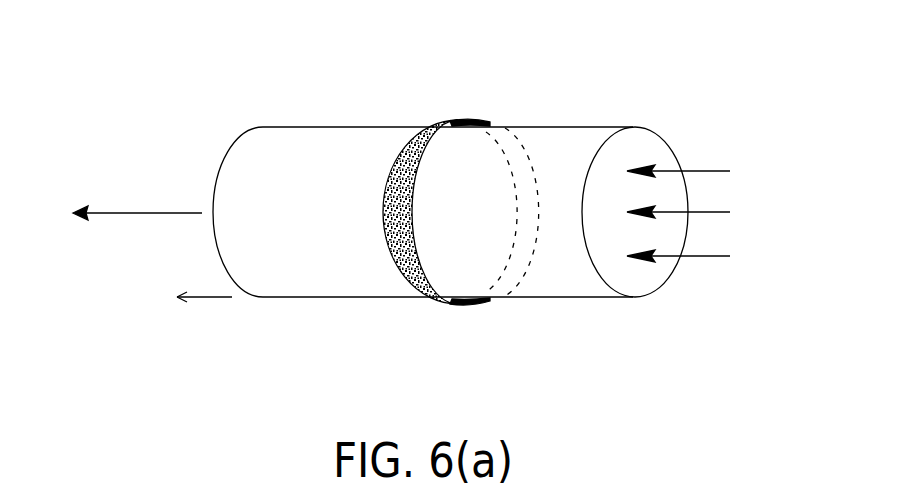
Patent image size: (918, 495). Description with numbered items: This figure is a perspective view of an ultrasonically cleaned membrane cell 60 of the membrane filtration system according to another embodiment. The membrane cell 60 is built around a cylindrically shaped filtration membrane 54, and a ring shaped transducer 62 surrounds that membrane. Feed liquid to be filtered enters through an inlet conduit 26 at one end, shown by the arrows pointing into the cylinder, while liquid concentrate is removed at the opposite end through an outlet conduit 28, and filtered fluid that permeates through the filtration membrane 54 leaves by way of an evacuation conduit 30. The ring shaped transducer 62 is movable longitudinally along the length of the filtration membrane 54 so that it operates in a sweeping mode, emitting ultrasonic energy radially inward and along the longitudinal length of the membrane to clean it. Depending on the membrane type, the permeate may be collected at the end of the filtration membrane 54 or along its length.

The inlet conduit 26 is at (705, 213).
The outlet conduit 28 is at (127, 213).
The evacuation conduit 30 is at (210, 297).
The filtration membrane 54 is at (357, 263).
The membrane cell 60 is at (715, 75).
The ring shaped transducer 62 is at (443, 123).